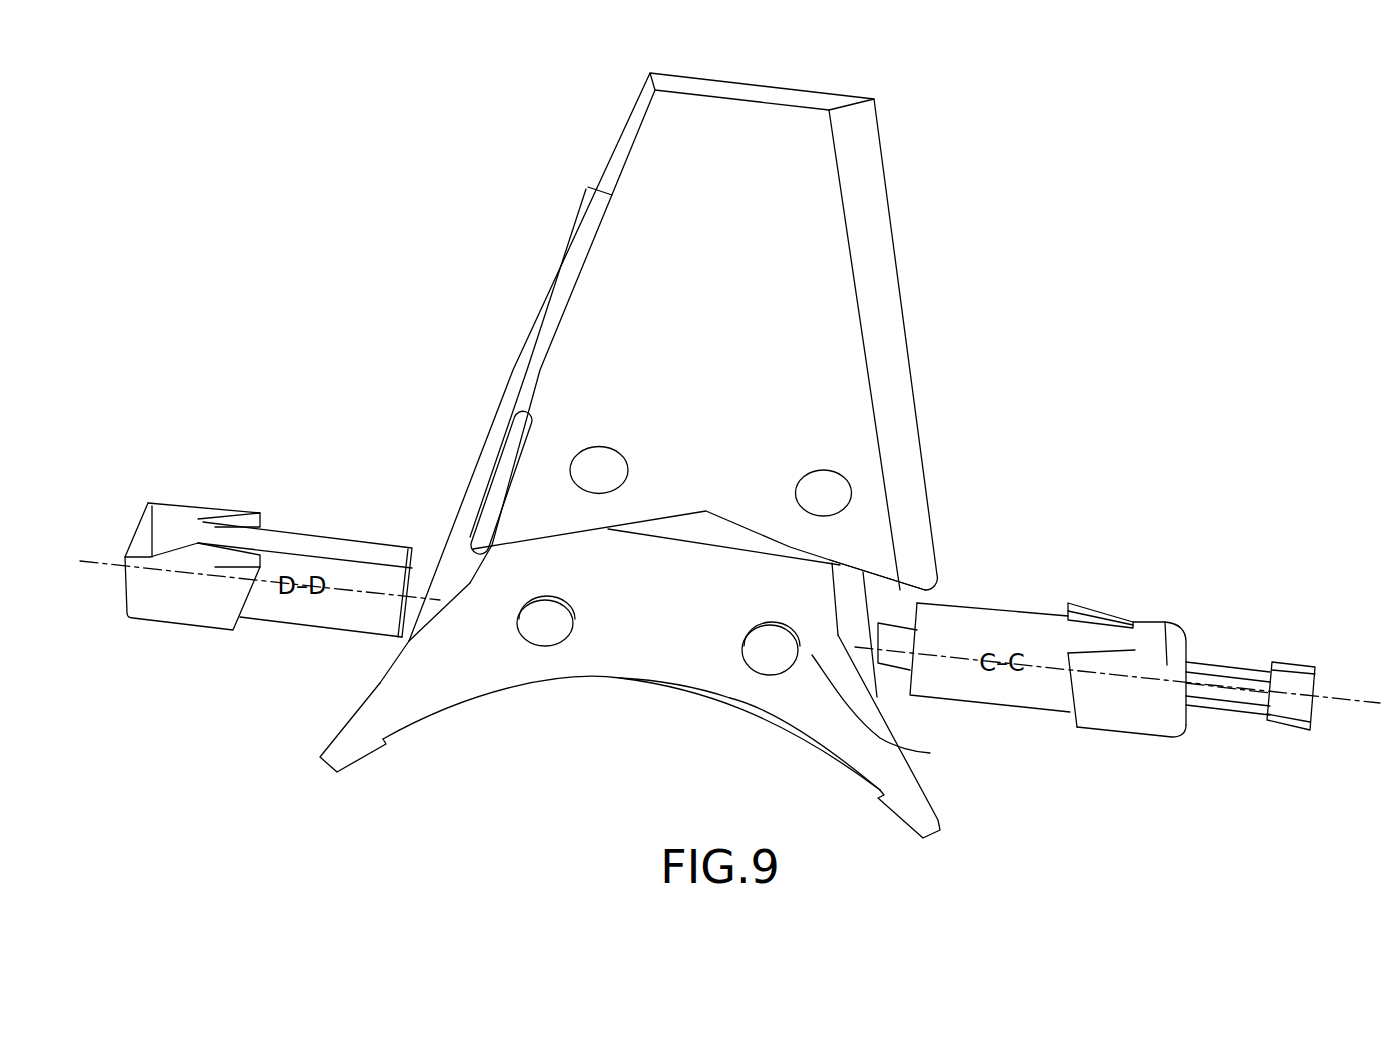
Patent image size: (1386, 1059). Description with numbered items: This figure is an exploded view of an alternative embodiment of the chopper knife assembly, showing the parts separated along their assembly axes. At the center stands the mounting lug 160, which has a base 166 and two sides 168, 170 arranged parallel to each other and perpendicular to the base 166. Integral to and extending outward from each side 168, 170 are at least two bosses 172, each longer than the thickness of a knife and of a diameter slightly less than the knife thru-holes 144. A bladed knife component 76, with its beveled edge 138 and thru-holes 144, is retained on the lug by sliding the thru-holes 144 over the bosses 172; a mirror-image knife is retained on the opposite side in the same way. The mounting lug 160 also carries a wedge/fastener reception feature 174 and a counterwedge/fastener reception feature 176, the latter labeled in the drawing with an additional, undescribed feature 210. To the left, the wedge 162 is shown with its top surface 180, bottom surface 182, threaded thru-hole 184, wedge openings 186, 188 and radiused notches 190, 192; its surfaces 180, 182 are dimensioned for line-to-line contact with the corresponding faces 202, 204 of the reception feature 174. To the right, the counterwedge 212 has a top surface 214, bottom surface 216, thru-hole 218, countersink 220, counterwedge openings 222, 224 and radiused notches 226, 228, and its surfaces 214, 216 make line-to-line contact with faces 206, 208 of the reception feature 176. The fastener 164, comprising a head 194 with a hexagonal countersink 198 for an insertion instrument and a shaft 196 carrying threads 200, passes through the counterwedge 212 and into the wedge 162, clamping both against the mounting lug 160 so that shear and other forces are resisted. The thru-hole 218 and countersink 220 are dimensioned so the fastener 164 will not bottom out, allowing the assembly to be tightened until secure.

The bladed knife component 76 is at (735, 135).
The beveled edge 138 is at (896, 256).
The thru-hole 144 is at (608, 446).
The mounting lug 160 is at (517, 672).
The wedge 162 is at (340, 533).
The fastener 164 is at (1240, 663).
The base 166 is at (708, 696).
The side 168 is at (822, 714).
The side 170 is at (892, 730).
The boss 172 is at (575, 627).
The wedge/fastener reception feature 174 is at (470, 583).
The counterwedge/fastener reception feature 176 is at (843, 637).
The top surface 180 is at (293, 545).
The bottom surface 182 is at (282, 627).
The threaded thru-hole 184 is at (410, 595).
The wedge opening 186 is at (220, 517).
The wedge opening 188 is at (213, 547).
The radiused notch 190 is at (192, 518).
The radiused notch 192 is at (183, 548).
The head 194 is at (1287, 728).
The shaft 196 is at (1223, 710).
The hexagonal countersink 198 is at (1315, 695).
The threads 200 is at (1207, 705).
The face 202 is at (520, 413).
The face 204 is at (477, 608).
The face 206 is at (836, 648).
The face 208 is at (896, 713).
The bend line 210 is at (840, 647).
The counterwedge 212 is at (1150, 612).
The top surface 214 is at (1037, 625).
The bottom surface 216 is at (1050, 712).
The thru-hole 218 is at (1190, 648).
The countersink 220 is at (1188, 660).
The counterwedge opening 222 is at (1122, 650).
The counterwedge opening 224 is at (1095, 607).
The radiused notch 226 is at (1140, 650).
The radiused notch 228 is at (1123, 613).